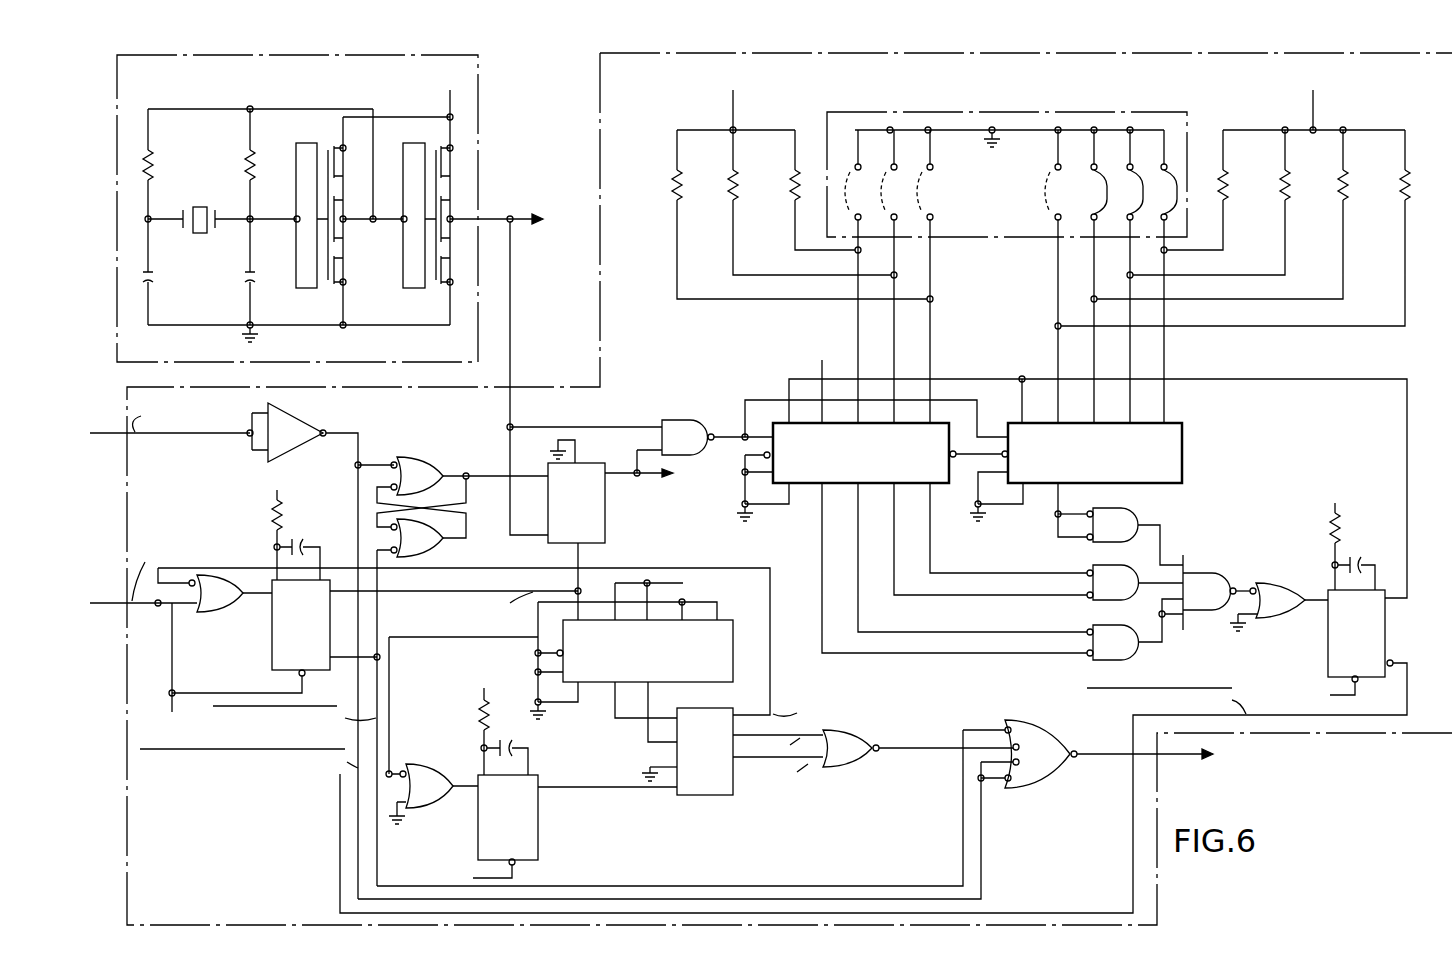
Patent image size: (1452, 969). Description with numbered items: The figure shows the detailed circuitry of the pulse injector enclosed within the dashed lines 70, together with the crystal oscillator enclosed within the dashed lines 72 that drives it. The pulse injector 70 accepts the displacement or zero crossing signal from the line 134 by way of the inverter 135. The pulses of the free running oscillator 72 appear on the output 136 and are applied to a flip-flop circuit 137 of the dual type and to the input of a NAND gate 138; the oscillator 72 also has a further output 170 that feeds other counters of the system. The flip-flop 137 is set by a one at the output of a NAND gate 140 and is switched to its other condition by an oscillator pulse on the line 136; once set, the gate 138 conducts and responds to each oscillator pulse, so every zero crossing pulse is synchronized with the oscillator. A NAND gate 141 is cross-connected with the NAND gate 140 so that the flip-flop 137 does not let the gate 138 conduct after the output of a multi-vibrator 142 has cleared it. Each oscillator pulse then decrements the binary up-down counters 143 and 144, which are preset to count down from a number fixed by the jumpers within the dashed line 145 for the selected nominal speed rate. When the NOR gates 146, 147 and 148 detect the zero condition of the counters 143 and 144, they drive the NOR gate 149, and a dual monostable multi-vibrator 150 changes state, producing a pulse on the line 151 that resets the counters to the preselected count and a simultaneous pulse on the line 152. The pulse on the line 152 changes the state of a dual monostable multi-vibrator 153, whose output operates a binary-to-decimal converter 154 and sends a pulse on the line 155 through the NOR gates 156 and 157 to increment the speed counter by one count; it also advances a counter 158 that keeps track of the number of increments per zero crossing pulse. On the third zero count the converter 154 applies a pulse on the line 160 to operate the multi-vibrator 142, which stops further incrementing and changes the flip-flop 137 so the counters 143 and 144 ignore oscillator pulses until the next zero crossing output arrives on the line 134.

The pulse injector 70 is at (612, 54).
The crystal oscillator 72 is at (478, 55).
The oscillator output 170 is at (510, 214).
The oscillator output line 136 is at (512, 333).
The zero crossing output line 134 is at (190, 436).
The inverter 135 is at (297, 414).
The NAND gate 140 is at (420, 462).
The NAND gate 141 is at (441, 548).
The dual monostable multi-vibrator 142 is at (270, 666).
The flip-flop circuit 137 is at (605, 536).
The NAND gate 138 is at (668, 422).
The binary up-down counter 143 is at (777, 431).
The binary up-down counter 144 is at (1184, 432).
The jumpers 145 is at (995, 110).
The NOR gate 146 is at (1125, 518).
The NOR gate 147 is at (1113, 560).
The NOR gate 148 is at (1113, 620).
The NOR gate 149 is at (1204, 597).
The dual monostable multi-vibrator 150 is at (1328, 632).
The reset line 151 is at (1261, 379).
The pulse line 152 is at (1407, 688).
The dual monostable multi-vibrator 153 is at (538, 779).
The binary-to-decimal converter 154 is at (725, 795).
The speed counter increment line 155 is at (1178, 756).
The NOR gate 156 is at (847, 740).
The NOR gate 157 is at (1038, 772).
The counter 158 is at (735, 635).
The line 160 is at (697, 585).